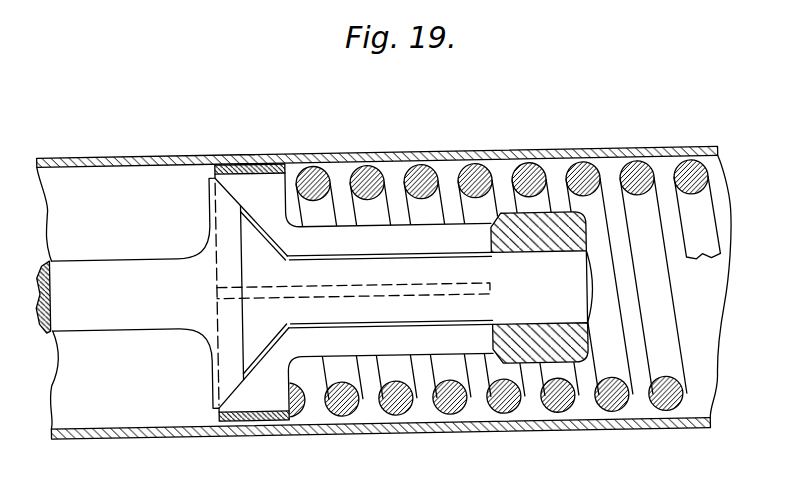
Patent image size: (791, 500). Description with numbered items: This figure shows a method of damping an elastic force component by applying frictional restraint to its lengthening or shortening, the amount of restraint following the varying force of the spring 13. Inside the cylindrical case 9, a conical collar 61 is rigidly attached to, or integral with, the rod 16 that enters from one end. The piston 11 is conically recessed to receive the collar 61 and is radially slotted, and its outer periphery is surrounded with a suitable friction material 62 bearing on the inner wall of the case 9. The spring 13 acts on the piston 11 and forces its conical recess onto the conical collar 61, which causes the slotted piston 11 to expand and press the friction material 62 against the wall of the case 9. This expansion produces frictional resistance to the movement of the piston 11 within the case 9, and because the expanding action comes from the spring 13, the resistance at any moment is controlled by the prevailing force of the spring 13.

The case 9 is at (115, 152).
The friction material 62 is at (237, 160).
The piston 11 is at (273, 220).
The rod 16 is at (147, 309).
The conical collar 61 is at (229, 366).
The spring 13 is at (500, 404).